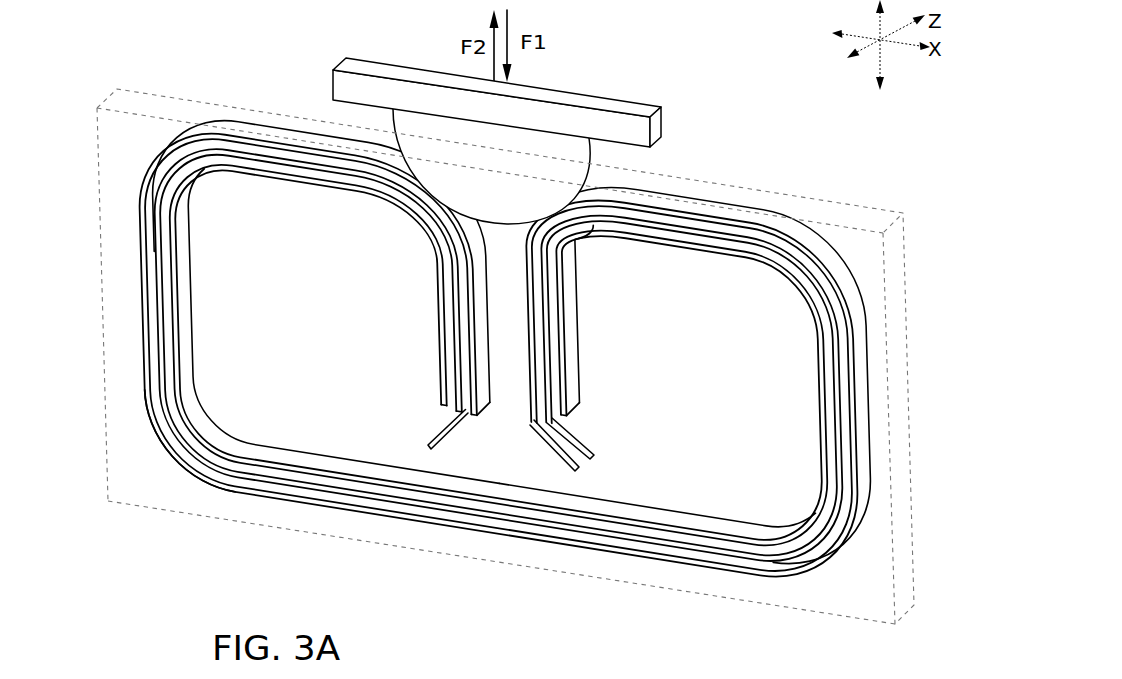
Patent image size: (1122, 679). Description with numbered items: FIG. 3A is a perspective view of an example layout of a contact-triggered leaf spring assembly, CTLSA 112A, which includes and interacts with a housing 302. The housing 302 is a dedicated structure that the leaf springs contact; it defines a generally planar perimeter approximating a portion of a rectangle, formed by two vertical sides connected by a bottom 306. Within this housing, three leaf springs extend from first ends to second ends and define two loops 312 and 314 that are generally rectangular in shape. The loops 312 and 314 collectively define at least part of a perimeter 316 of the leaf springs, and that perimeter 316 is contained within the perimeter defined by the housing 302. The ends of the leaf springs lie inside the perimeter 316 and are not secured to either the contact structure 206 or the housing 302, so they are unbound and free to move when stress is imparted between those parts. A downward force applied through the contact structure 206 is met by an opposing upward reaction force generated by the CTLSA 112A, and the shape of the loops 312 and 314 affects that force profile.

The housing 302 is at (636, 590).
The bottom 306 is at (262, 523).
The contact structure 206 is at (605, 97).
The CTLSA 112A is at (497, 349).
The loop 312 is at (328, 282).
The loop 314 is at (747, 356).
The perimeter 316 is at (186, 476).